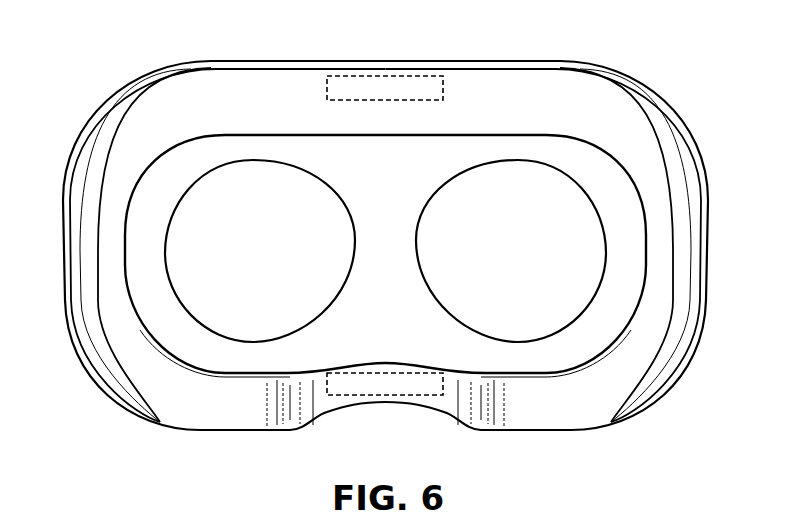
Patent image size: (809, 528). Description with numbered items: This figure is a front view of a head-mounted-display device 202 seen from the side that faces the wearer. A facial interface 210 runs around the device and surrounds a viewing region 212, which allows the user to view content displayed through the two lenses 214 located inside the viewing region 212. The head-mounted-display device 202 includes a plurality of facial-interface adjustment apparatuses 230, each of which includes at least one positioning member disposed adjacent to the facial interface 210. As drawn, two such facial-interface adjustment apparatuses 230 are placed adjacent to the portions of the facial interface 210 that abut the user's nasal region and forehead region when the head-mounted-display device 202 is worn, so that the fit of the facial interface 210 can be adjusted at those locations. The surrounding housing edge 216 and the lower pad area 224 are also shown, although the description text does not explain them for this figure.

The head-mounted-display device 202 is at (71, 81).
The facial interface 210 is at (637, 412).
The viewing region 212 is at (608, 180).
The lenses 214 is at (262, 159).
The outer shell 216 is at (702, 175).
The lower cushion pad 224 is at (557, 408).
The facial-interface adjustment apparatus 230 is at (445, 85).